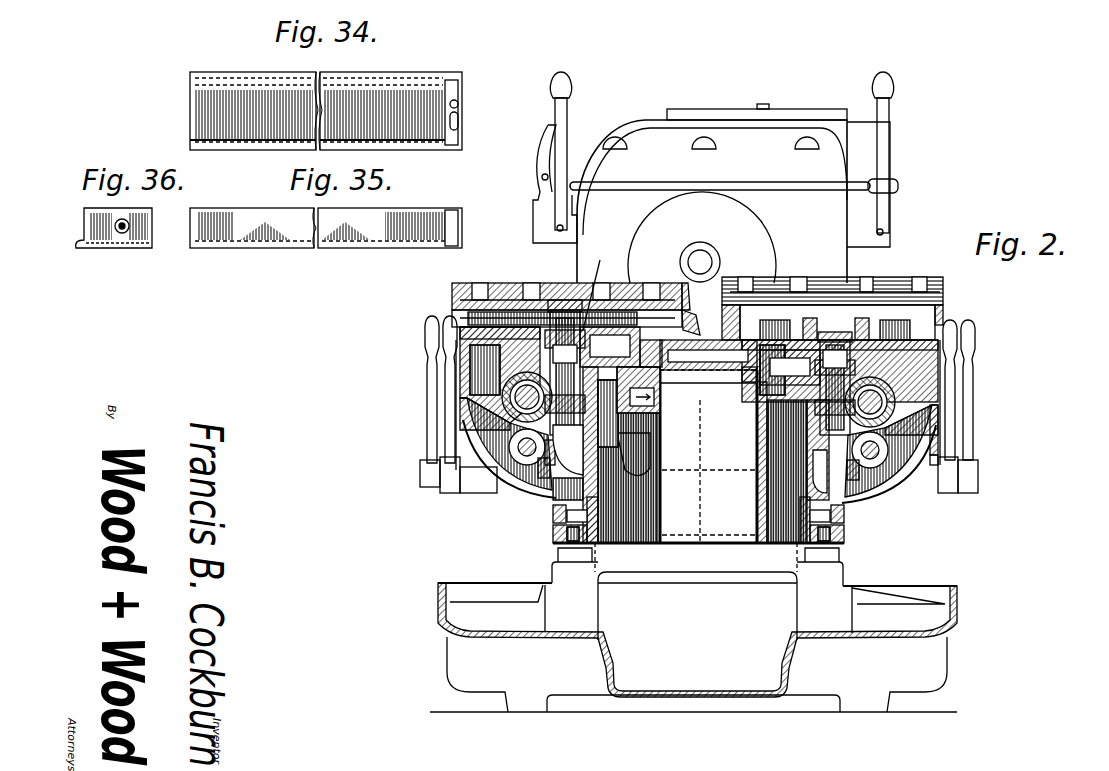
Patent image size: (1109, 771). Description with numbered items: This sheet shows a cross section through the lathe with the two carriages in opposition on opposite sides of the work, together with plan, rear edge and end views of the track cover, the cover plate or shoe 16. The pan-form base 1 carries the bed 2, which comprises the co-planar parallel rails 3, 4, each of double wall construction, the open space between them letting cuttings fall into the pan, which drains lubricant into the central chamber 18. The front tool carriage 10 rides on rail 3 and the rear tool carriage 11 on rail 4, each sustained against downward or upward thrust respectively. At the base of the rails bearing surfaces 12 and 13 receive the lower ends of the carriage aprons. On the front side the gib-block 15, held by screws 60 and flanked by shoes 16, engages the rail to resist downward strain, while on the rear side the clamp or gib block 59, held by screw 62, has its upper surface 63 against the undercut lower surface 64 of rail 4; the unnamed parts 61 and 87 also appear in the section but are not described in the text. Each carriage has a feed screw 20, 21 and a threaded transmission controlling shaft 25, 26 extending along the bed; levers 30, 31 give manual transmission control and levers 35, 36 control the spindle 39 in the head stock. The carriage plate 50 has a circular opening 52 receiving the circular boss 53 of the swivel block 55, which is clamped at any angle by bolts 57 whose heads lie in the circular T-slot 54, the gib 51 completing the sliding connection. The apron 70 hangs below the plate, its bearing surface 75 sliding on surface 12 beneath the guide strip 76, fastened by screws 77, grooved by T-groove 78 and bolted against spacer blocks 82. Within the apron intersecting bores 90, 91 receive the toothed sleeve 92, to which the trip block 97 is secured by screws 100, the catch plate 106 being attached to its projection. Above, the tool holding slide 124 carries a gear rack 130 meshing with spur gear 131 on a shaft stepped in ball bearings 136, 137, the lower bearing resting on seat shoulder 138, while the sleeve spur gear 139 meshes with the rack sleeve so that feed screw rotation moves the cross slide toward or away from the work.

In FIG. 2, the base 1 is at (880, 588).
In FIG. 2, the bed 2 is at (722, 574).
In FIG. 2, the rail 3 is at (717, 401).
In FIG. 2, the rail 4 is at (723, 455).
In FIG. 2, the tool carriage 10 is at (462, 349).
In FIG. 2, the tool carriage 11 is at (962, 354).
In FIG. 2, the bearing surface 12 is at (620, 545).
In FIG. 2, the bearing surface 13 is at (783, 556).
In FIG. 2, the gib-block 15 is at (708, 355).
In FIG. 34, the cover plate or shoe 16 is at (380, 72).
In FIG. 36, the cover plate or shoe 16 is at (152, 218).
In FIG. 35, the cover plate or shoe 16 is at (232, 212).
In FIG. 2, the central chamber 18 is at (700, 698).
In FIG. 2, the feed screw 20 is at (480, 400).
In FIG. 2, the feed screw 21 is at (940, 412).
In FIG. 2, the transmission controlling shaft 25 is at (535, 465).
In FIG. 2, the transmission controlling shaft 26 is at (933, 458).
In FIG. 2, the lever 30 is at (427, 400).
In FIG. 2, the lever 31 is at (445, 440).
In FIG. 2, the lever 35 is at (567, 130).
In FIG. 2, the lever 36 is at (546, 138).
In FIG. 2, the spindle 39 is at (703, 258).
In FIG. 2, the carriage plate 50 is at (447, 358).
In FIG. 2, the gib 51 is at (700, 356).
In FIG. 2, the circular opening 52 is at (500, 292).
In FIG. 2, the circular boss 53 is at (600, 300).
In FIG. 2, the circular T-slot 54 is at (462, 334).
In FIG. 2, the swivel block 55 is at (688, 330).
In FIG. 2, the bolt 57 is at (837, 322).
In FIG. 2, the clamp or gib block 59 is at (709, 474).
In FIG. 2, the screw 60 is at (673, 350).
In FIG. 2, the partition 61 is at (708, 370).
In FIG. 2, the screw 62 is at (708, 388).
In FIG. 2, the upper surface 63 is at (658, 400).
In FIG. 2, the undercut lower surface 64 is at (742, 372).
In FIG. 2, the apron 70 is at (495, 480).
In FIG. 2, the bearing surface 75 is at (802, 510).
In FIG. 2, the guide strip 76 is at (570, 541).
In FIG. 2, the screw 77 is at (553, 535).
In FIG. 2, the longitudinal T-groove 78 is at (556, 515).
In FIG. 2, the spacer block 82 is at (822, 548).
In FIG. 2, the foot 87 is at (572, 552).
In FIG. 2, the horizontal bore 90 is at (510, 400).
In FIG. 2, the vertical bore 91 is at (700, 372).
In FIG. 2, the sleeve 92 is at (503, 392).
In FIG. 2, the trip block 97 is at (518, 447).
In FIG. 2, the screw 100 is at (545, 480).
In FIG. 2, the catch plate 106 is at (567, 513).
In FIG. 2, the tool holding slide 124 is at (548, 293).
In FIG. 2, the gear rack 130 is at (525, 300).
In FIG. 2, the spur gear 131 is at (565, 315).
In FIG. 2, the upper ball bearing 136 is at (616, 361).
In FIG. 2, the lower ball bearing 137 is at (652, 462).
In FIG. 2, the seat shoulder 138 is at (723, 471).
In FIG. 2, the sleeve spur gear 139 is at (492, 448).